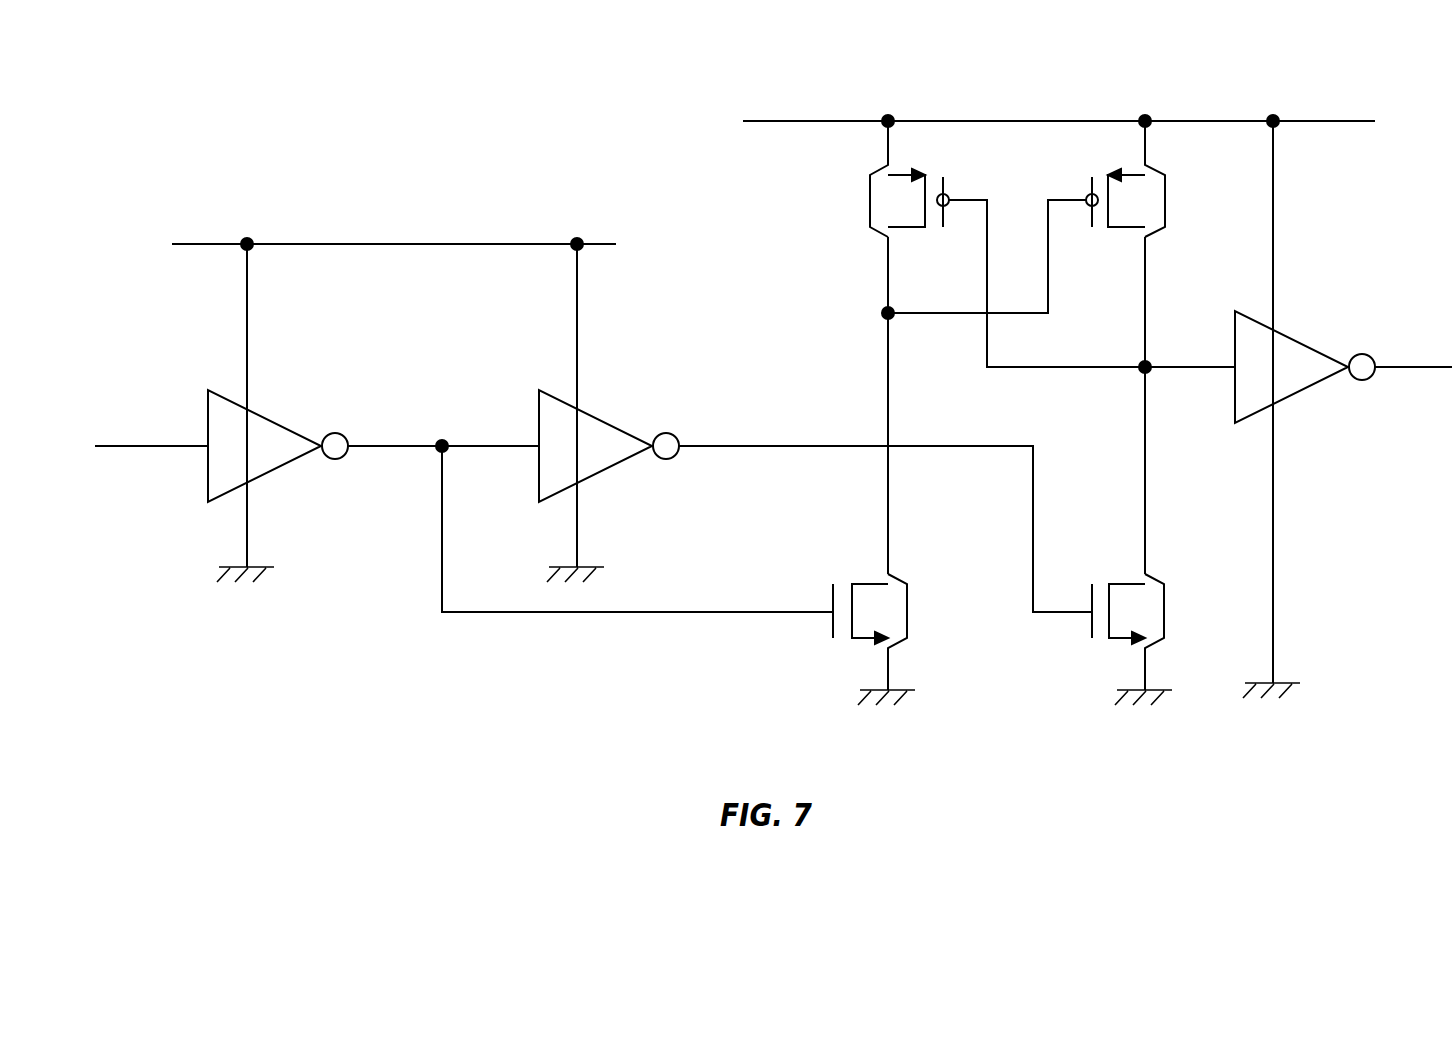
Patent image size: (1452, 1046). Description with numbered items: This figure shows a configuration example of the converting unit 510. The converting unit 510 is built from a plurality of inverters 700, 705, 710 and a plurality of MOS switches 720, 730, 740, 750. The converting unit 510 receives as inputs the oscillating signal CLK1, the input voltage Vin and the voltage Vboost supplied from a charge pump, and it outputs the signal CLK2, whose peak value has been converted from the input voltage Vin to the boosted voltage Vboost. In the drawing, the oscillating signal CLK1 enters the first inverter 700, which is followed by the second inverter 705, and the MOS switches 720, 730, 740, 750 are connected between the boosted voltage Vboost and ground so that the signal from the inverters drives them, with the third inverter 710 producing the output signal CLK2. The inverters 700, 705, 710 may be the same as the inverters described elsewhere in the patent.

The converting unit 510 is at (346, 138).
The inverter 700 is at (266, 411).
The inverter 705 is at (597, 423).
The inverter 710 is at (1292, 332).
The MOS switch 720 is at (870, 196).
The MOS switch 730 is at (907, 612).
The MOS switch 740 is at (1168, 190).
The MOS switch 750 is at (1165, 602).